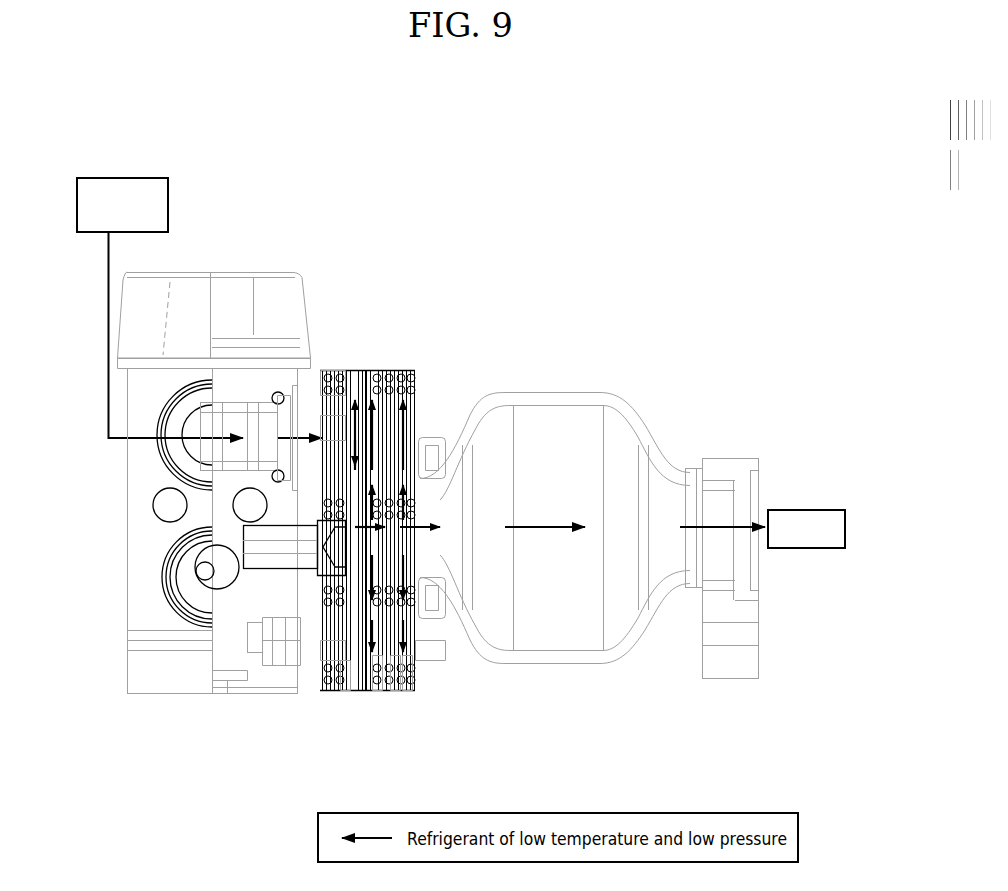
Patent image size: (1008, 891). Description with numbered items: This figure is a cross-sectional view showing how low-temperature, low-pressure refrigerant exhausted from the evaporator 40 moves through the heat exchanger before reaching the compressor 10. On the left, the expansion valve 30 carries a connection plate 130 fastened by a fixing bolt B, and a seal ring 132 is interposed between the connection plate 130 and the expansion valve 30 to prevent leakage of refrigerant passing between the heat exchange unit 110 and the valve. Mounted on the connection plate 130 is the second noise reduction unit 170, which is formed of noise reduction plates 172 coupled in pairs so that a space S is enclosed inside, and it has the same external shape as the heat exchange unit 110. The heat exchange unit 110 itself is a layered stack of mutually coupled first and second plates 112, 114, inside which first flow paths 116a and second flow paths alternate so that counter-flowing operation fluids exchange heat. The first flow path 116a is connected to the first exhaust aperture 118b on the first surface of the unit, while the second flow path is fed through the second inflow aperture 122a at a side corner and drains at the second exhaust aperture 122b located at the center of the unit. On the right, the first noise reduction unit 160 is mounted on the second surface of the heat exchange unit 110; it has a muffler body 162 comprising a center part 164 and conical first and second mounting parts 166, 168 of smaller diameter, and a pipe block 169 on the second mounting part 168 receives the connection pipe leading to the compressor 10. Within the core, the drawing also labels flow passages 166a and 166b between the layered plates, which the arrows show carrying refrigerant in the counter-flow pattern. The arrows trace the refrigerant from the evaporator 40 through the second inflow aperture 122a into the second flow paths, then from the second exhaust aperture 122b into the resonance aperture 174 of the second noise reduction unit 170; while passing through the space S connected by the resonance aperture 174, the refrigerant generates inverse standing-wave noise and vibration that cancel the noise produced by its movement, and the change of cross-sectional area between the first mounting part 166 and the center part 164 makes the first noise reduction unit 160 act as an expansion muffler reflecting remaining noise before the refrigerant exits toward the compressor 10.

The compressor 10 is at (816, 508).
The expansion valve 30 is at (135, 585).
The evaporator 40 is at (139, 177).
The heat exchange unit 110 is at (410, 362).
The first plate 112 is at (420, 647).
The second plate 114 is at (428, 445).
The first flow path 116a is at (381, 681).
The first exhaust aperture 118b is at (346, 674).
The second inflow aperture 122a is at (340, 427).
The second exhaust aperture 122b is at (420, 511).
The connection plate 130 is at (295, 376).
The seal ring 132 is at (270, 395).
The first noise reduction unit 160 is at (566, 487).
The muffler body 162 is at (657, 414).
The center part 164 is at (566, 389).
The first mounting part 166 is at (405, 394).
The third passage 166a is at (406, 676).
The fourth passage 166b is at (394, 682).
The second mounting part 168 is at (684, 470).
The pipe block 169 is at (727, 462).
The second noise reduction unit 170 is at (332, 346).
The noise reduction plate 172 is at (315, 603).
The resonance aperture 174 is at (340, 484).
The fixing bolt B is at (253, 543).
The space S is at (333, 650).